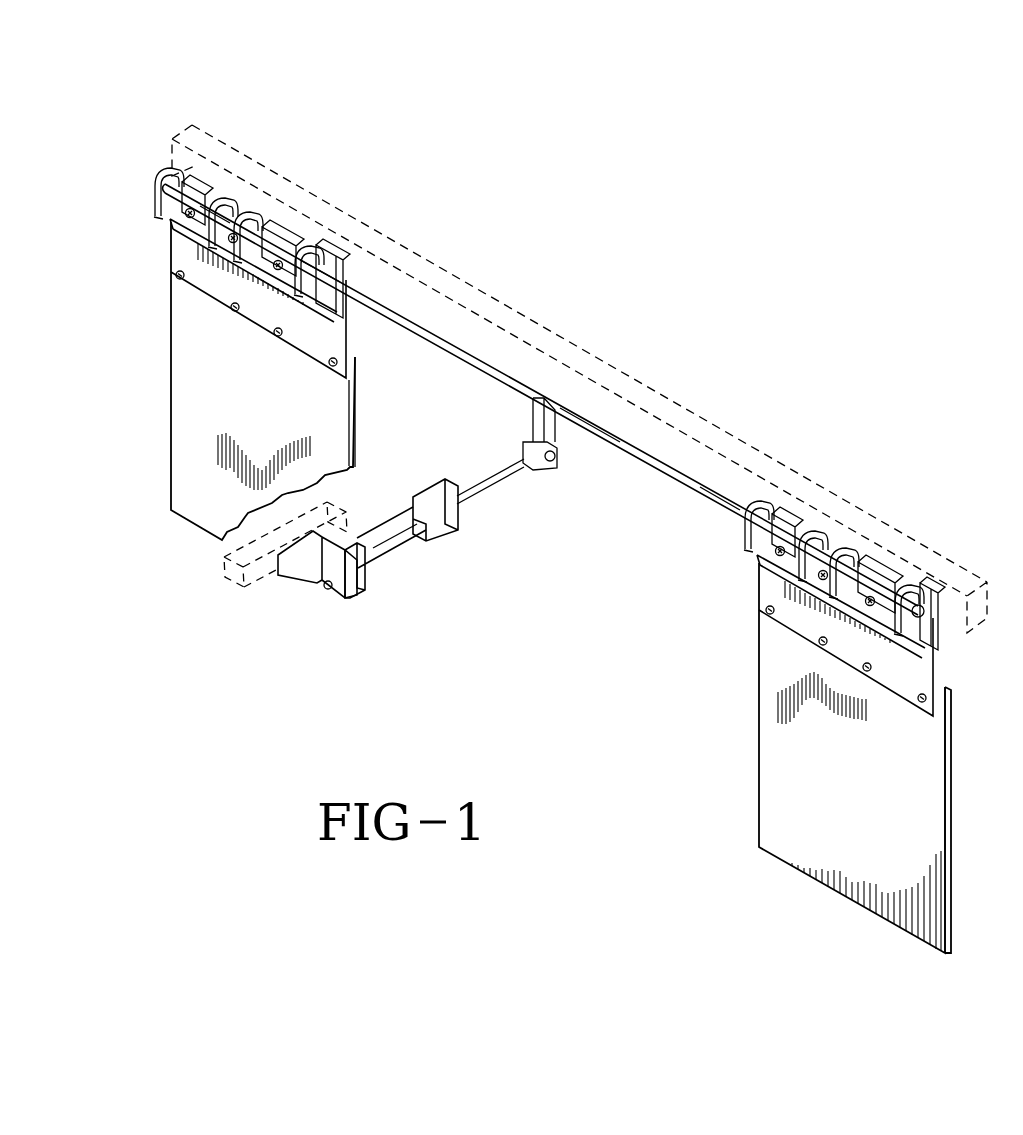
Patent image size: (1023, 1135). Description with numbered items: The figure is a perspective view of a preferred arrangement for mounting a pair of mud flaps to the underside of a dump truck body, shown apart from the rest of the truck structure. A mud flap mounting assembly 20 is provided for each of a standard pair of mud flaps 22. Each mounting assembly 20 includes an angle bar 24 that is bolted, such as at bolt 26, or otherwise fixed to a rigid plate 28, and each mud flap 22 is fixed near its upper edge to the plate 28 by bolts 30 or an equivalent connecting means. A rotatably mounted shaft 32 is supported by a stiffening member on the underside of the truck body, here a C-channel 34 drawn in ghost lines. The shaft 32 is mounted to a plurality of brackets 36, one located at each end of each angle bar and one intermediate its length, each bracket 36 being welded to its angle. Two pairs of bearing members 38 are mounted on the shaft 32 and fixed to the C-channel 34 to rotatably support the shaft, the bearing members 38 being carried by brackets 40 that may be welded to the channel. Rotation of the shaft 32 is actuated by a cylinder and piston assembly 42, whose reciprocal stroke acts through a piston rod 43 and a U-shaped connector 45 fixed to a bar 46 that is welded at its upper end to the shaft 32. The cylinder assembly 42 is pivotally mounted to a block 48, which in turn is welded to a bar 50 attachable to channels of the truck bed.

The mud flap mounting assembly 20 is at (165, 242).
The mud flap 22 is at (207, 475).
The angle bar 24 is at (200, 237).
The bolt 26 is at (273, 267).
The rigid plate 28 is at (307, 348).
The bolts 30 is at (278, 330).
The shaft 32 is at (450, 343).
The C-channel 34 is at (627, 377).
The bracket 36 is at (170, 190).
The bearing member 38 is at (193, 183).
The bracket 40 is at (200, 170).
The cylinder and piston assembly 42 is at (405, 551).
The piston rod 43 is at (482, 483).
The U-shaped connector 45 is at (545, 458).
The bar 46 is at (536, 432).
The block 48 is at (302, 572).
The bar 50 is at (223, 570).